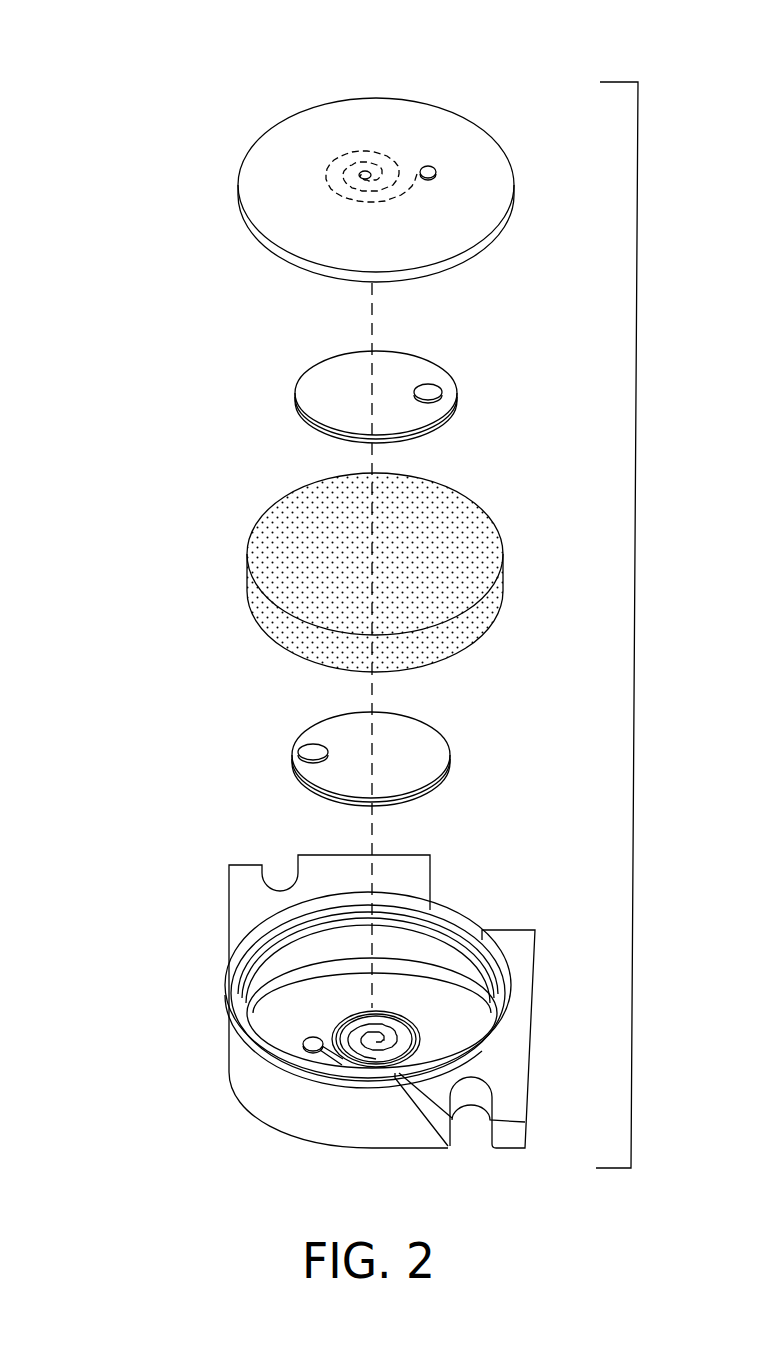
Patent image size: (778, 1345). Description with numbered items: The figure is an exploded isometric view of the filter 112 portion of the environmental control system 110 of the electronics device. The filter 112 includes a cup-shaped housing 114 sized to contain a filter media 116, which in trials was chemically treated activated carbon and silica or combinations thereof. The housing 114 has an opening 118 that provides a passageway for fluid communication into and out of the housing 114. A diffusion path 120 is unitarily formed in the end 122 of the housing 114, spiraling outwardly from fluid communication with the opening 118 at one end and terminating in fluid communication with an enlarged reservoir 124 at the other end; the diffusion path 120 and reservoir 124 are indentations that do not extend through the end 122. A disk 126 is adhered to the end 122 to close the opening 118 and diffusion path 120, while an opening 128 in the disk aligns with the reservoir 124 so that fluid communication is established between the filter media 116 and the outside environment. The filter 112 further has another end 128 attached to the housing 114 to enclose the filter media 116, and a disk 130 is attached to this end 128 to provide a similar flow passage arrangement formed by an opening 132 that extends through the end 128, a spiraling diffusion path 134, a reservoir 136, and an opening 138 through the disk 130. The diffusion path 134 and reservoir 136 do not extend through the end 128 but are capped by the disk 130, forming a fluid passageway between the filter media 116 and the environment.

The environmental control system 110 is at (158, 48).
The filter 112 is at (634, 753).
The cup-shaped housing 114 is at (225, 1018).
The filter media 116 is at (270, 510).
The opening 118 is at (373, 1047).
The diffusion path 120 is at (338, 1062).
The end 122 is at (265, 1123).
The reservoir 124 is at (303, 1047).
The disk 126 is at (438, 731).
The opening / end 128 is at (258, 137).
The disk 130 is at (310, 368).
The opening 132 is at (370, 170).
The diffusion path 134 is at (373, 148).
The reservoir 136 is at (430, 168).
The opening 138 is at (443, 389).